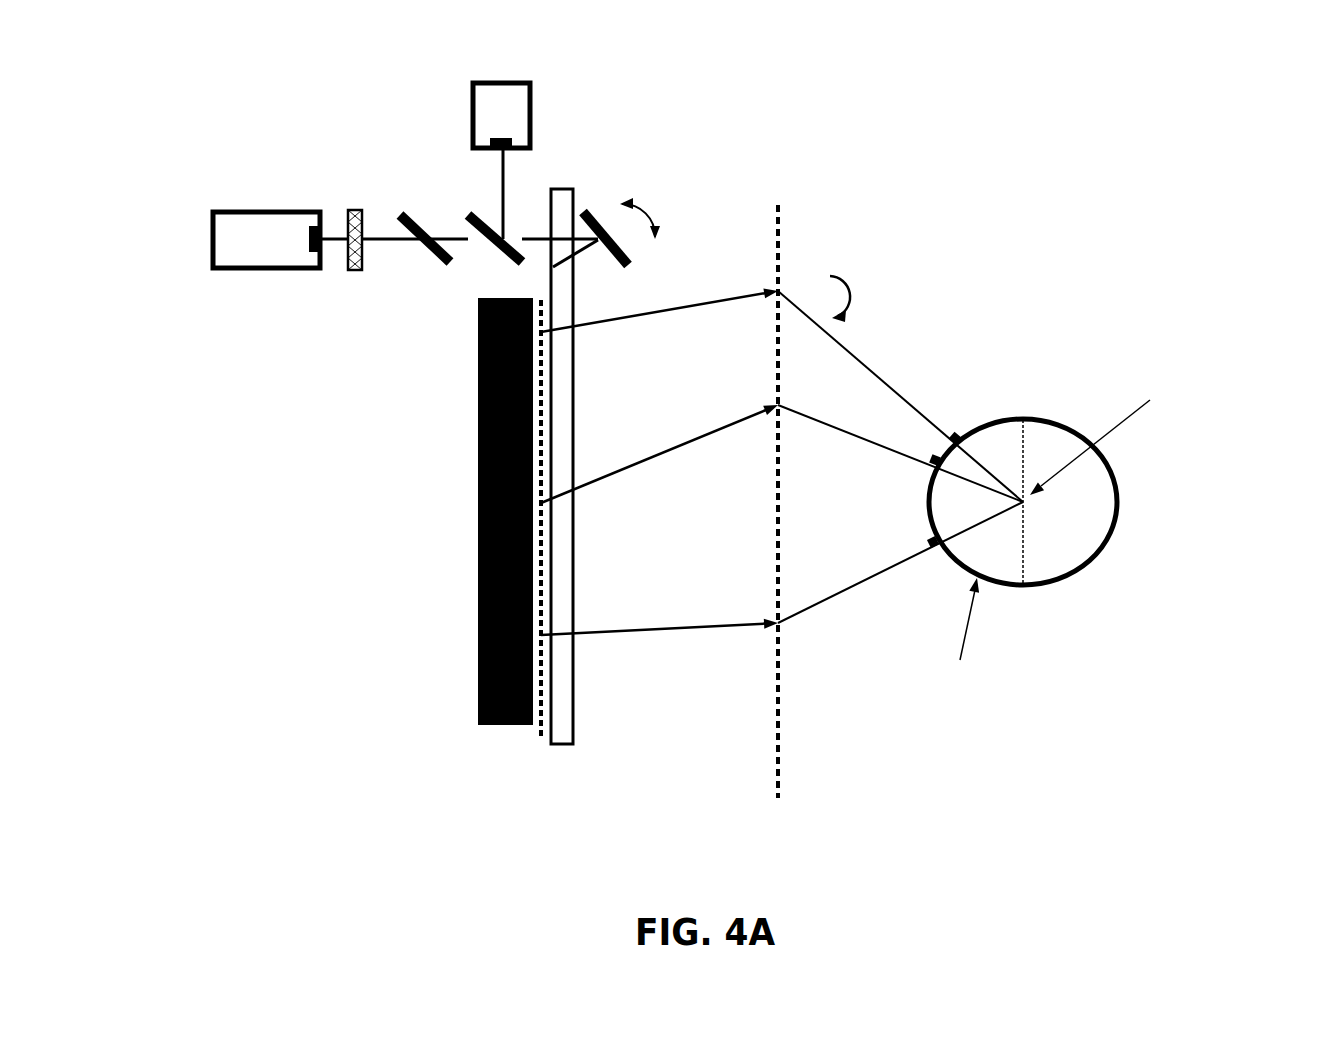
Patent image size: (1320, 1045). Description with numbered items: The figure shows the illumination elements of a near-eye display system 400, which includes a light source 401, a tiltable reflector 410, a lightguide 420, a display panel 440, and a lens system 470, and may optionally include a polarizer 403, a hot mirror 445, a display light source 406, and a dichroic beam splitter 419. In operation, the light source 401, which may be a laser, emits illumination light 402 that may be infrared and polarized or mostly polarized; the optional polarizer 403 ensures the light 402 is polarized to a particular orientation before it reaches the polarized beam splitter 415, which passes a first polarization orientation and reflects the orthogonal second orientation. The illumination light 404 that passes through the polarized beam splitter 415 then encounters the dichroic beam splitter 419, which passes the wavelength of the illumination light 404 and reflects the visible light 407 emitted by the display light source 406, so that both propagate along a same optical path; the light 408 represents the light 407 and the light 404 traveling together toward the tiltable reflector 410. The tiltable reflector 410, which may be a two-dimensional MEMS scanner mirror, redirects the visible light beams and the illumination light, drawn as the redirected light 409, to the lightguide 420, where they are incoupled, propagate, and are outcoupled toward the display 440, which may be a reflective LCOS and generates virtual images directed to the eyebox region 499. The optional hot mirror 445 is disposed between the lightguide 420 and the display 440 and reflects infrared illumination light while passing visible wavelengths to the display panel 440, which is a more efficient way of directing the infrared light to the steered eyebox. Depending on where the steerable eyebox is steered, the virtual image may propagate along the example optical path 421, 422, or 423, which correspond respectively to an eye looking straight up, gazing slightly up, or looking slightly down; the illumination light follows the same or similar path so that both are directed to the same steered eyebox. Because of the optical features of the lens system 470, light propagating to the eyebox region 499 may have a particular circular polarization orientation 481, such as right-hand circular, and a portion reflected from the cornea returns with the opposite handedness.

The near-eye display system 400 is at (1316, 54).
The light source 401 is at (213, 212).
The illumination light 402 is at (338, 228).
The polarizer 403 is at (355, 270).
The illumination light 404 is at (452, 233).
The display light source 406 is at (530, 81).
The light 407 is at (498, 197).
The light 408 is at (527, 235).
The reflected light beam 409 is at (578, 255).
The tiltable reflector 410 is at (631, 254).
The polarized beam splitter 415 is at (430, 252).
The dichroic beam splitter 419 is at (504, 255).
The lightguide 420 is at (572, 189).
The optical path 421 is at (688, 312).
The optical path 422 is at (725, 425).
The optical path 423 is at (722, 632).
The display panel 440 is at (480, 727).
The hot mirror 445 is at (540, 737).
The lens system 470 is at (778, 205).
The circular polarization orientation 481 is at (850, 270).
The eyebox region 499 is at (1026, 416).